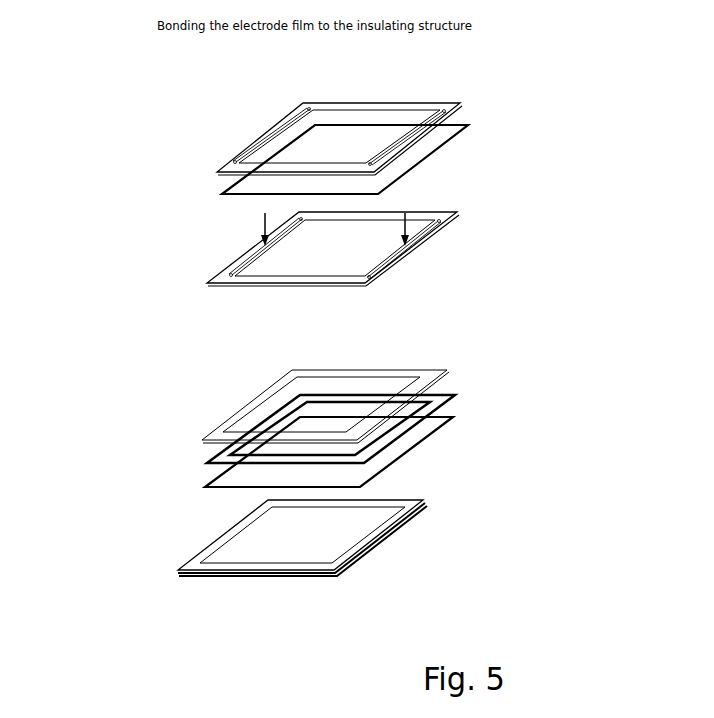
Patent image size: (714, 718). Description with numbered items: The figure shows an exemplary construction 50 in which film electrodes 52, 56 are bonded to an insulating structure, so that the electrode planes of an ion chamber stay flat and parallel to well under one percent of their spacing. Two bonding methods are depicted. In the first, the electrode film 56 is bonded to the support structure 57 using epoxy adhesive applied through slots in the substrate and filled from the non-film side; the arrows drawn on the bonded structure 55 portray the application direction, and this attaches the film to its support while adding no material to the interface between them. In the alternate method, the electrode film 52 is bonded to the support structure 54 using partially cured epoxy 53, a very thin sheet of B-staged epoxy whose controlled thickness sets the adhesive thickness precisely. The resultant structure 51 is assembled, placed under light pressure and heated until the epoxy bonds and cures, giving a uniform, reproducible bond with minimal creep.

The construction 50 is at (102, 560).
The resultant structure 51 is at (427, 520).
The electrode film 52 is at (453, 433).
The partially cured epoxy 53 is at (465, 388).
The support structure 54 is at (453, 363).
The bonded structure 55 is at (428, 252).
The electrode film 56 is at (467, 139).
The support structure 57 is at (465, 102).